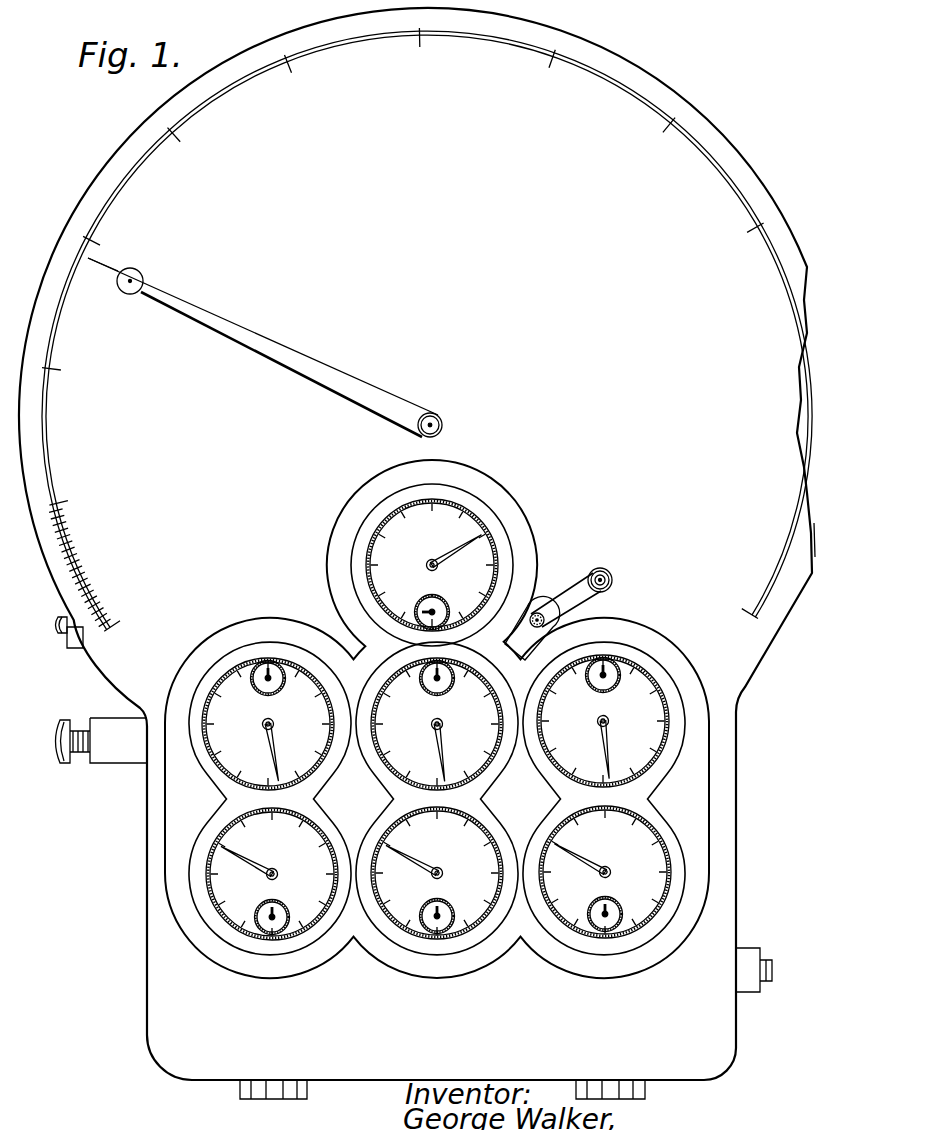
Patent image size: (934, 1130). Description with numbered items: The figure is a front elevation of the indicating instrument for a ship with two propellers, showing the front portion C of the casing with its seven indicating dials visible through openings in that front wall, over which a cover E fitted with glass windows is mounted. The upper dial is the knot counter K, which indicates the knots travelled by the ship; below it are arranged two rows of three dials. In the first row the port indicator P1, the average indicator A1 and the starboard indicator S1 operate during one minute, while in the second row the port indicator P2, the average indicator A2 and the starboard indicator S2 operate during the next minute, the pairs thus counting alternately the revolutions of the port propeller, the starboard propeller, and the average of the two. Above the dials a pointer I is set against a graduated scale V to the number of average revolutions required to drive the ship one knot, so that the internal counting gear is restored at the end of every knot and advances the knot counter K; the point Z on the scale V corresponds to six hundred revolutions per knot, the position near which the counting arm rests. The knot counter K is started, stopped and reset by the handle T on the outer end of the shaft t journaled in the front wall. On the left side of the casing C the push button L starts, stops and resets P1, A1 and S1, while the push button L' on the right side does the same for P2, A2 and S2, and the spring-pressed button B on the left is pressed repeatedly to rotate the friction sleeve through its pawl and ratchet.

The front portion of casing C is at (691, 173).
The scale V is at (378, 38).
The point corresponding to 600 revolutions per knot Z is at (115, 619).
The pointer I is at (318, 370).
The cover E is at (430, 978).
The knot counter K is at (470, 518).
The port propeller indicator P1 is at (268, 724).
The average revolutions indicator A1 is at (437, 724).
The starboard propeller indicator S1 is at (603, 721).
The port propeller indicator P2 is at (272, 874).
The average revolutions indicator A2 is at (437, 873).
The starboard propeller indicator S2 is at (605, 872).
The handle T is at (605, 571).
The shaft t is at (540, 612).
The push button L is at (60, 650).
The push button L' is at (759, 987).
The button B is at (64, 767).